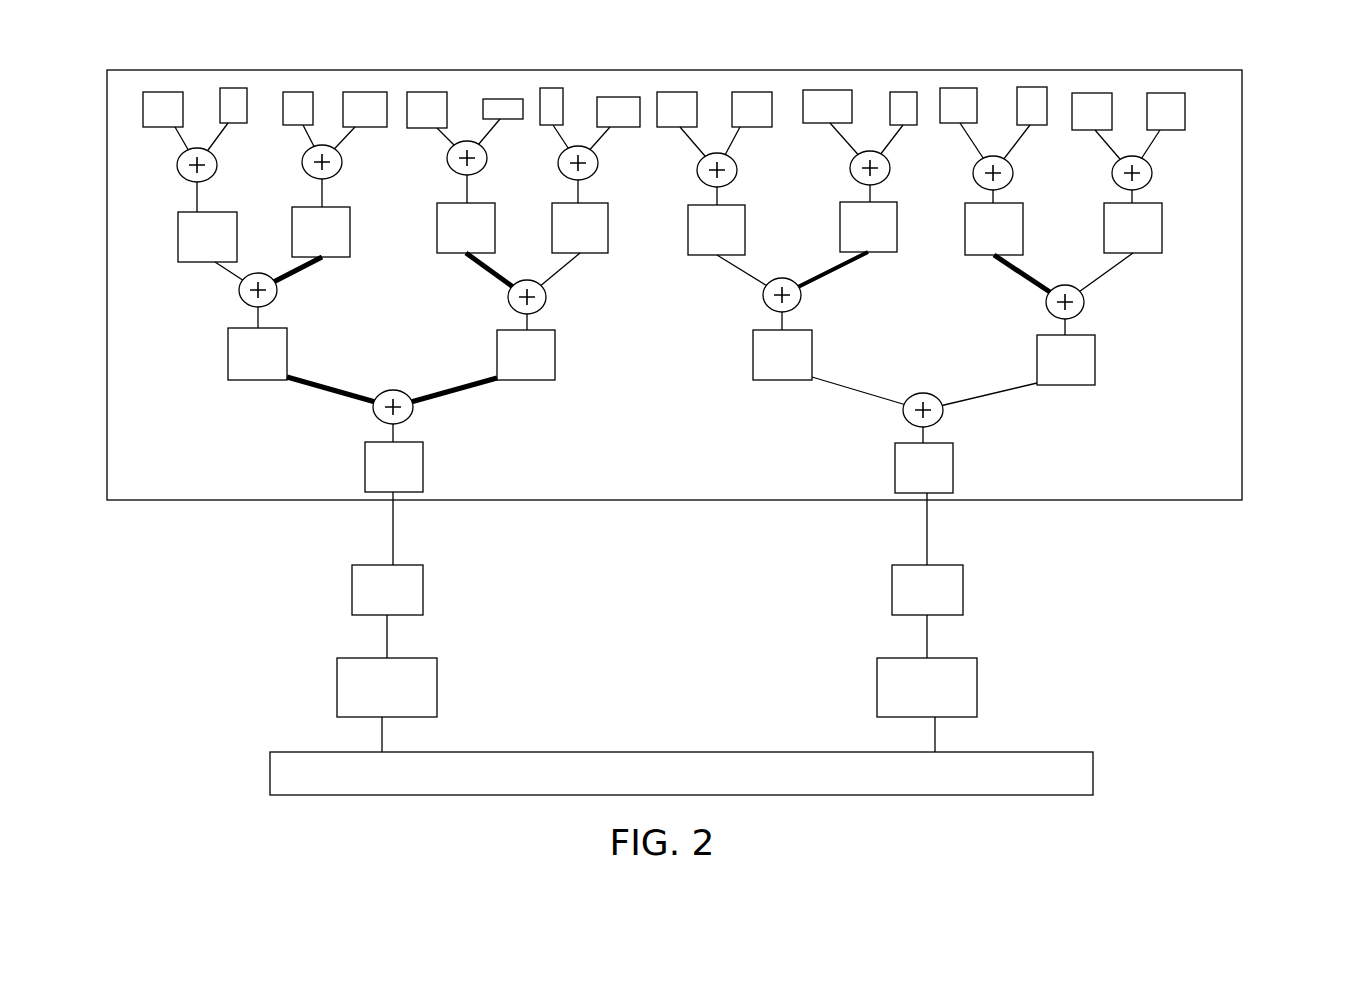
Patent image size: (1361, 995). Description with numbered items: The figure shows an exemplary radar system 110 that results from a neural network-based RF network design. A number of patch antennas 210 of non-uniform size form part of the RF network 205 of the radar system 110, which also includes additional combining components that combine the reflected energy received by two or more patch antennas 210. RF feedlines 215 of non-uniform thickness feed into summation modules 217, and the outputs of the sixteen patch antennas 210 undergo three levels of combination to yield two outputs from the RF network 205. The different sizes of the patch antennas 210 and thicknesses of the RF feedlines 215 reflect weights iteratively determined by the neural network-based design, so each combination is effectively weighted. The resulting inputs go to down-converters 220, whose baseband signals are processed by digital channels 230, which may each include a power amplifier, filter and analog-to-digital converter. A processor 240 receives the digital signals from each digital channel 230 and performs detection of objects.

The radar system 110 is at (1299, 138).
The RF network 205 is at (107, 263).
The patch antennas 210 is at (668, 136).
The RF feedlines 215 is at (1116, 284).
The summation modules 217 is at (354, 189).
The down-converters 220 is at (657, 590).
The digital channels 230 is at (657, 687).
The processor 240 is at (681, 773).